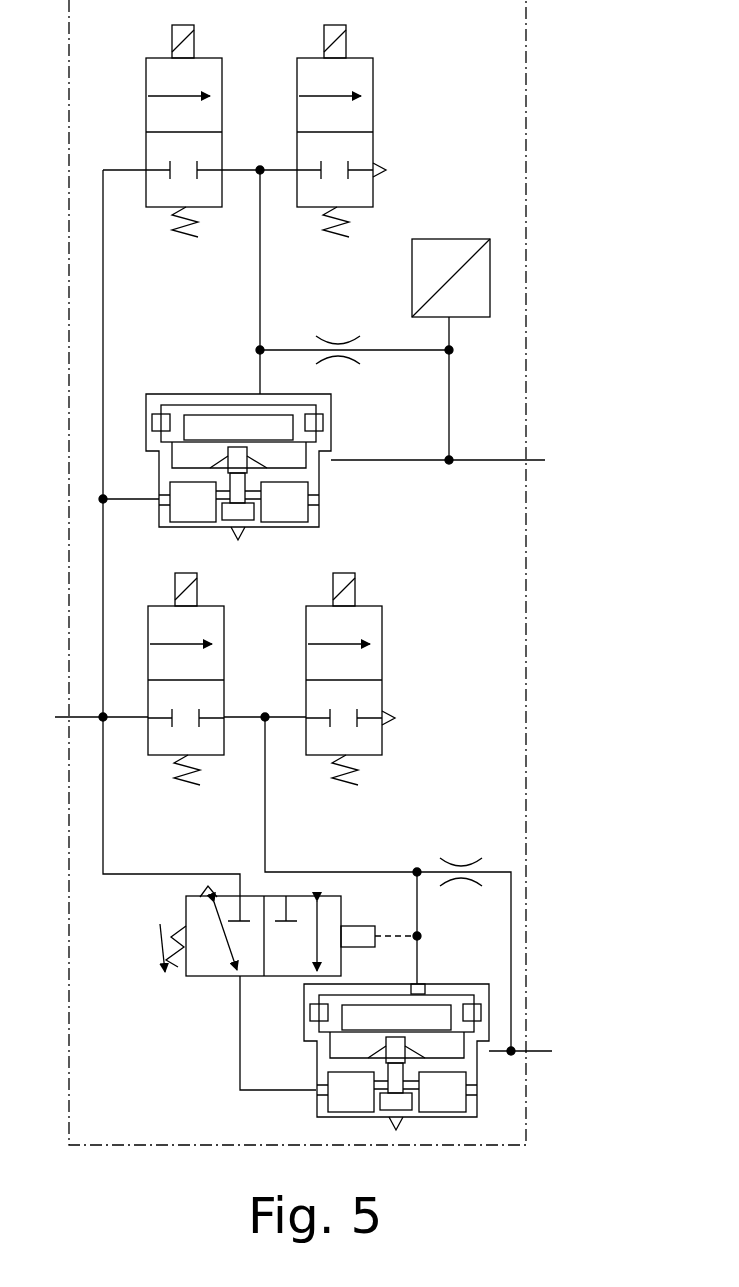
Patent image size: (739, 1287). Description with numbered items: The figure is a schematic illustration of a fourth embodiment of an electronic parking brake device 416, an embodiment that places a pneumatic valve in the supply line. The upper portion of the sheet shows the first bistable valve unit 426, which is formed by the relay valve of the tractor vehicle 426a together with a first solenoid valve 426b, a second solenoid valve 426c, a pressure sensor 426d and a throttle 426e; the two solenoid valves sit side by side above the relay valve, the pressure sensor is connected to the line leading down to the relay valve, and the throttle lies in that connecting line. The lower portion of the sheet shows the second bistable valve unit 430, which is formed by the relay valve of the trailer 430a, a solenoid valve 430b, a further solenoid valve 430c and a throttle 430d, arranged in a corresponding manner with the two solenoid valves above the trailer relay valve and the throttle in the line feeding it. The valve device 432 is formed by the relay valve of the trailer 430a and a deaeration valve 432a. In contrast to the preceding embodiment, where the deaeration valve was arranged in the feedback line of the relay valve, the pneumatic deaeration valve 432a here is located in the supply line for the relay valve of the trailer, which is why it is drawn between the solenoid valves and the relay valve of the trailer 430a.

The electronic parking brake device 416 is at (585, 41).
The first bistable valve unit 426 is at (585, 154).
The second bistable valve unit 430 is at (585, 269).
The valve device 432 is at (585, 384).
The relay valve of the tractor vehicle 426a is at (196, 394).
The first solenoid valve 426b is at (172, 68).
The second solenoid valve 426c is at (360, 78).
The pressure sensor 426d is at (450, 239).
The throttle 426e is at (338, 337).
The relay valve of the trailer 430a is at (312, 1103).
The solenoid valve 430b is at (172, 742).
The further solenoid valve 430c is at (355, 614).
The throttle 430d is at (460, 858).
The deaeration valve 432a is at (210, 963).